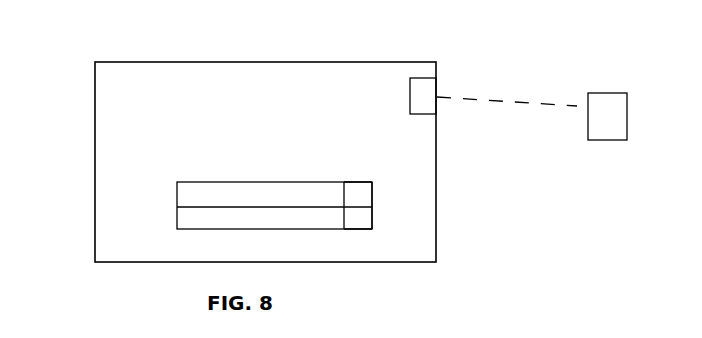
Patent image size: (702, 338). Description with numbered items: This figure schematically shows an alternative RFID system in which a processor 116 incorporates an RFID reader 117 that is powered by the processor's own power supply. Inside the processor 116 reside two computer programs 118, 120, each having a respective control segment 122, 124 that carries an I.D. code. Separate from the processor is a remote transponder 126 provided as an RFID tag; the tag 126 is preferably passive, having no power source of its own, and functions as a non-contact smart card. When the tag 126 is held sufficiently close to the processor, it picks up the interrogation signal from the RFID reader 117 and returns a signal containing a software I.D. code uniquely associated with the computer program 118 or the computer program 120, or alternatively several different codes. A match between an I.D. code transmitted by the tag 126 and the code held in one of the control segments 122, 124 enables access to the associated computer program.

The processor 116 is at (103, 80).
The RFID reader 117 is at (430, 93).
The computer program 118 is at (282, 188).
The computer program 120 is at (183, 214).
The control segment 122 is at (356, 187).
The control segment 124 is at (355, 225).
The remote transponder 126 is at (608, 137).